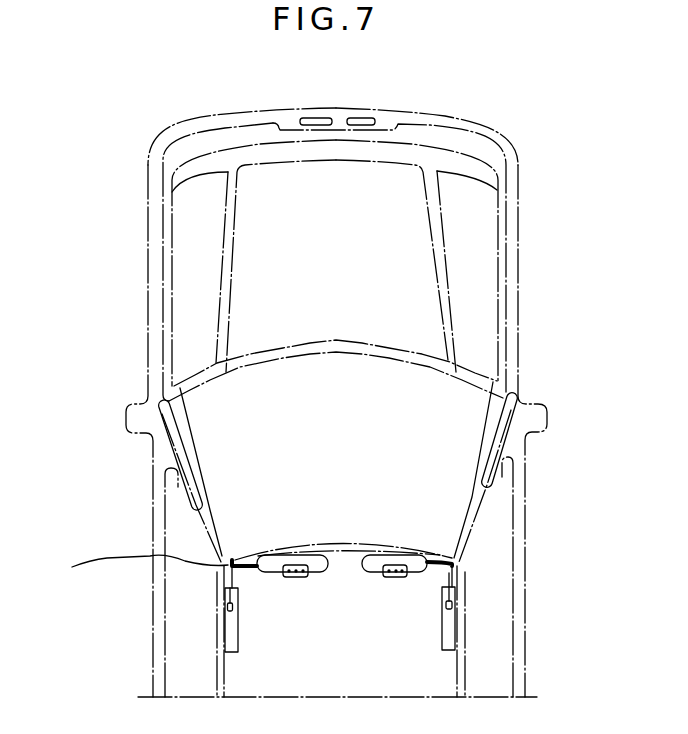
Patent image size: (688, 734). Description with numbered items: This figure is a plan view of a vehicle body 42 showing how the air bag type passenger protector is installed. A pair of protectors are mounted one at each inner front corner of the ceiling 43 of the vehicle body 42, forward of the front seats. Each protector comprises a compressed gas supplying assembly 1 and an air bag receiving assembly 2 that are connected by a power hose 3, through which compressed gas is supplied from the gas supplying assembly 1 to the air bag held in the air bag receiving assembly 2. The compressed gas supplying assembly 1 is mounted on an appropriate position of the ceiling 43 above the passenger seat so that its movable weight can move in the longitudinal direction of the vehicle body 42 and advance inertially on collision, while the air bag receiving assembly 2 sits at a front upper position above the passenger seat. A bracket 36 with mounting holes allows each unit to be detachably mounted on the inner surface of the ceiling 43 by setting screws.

The compressed gas supplying assembly 1 is at (231, 637).
The air bag receiving assembly 2 is at (313, 560).
The power hose 3 is at (233, 560).
The bracket 36 is at (387, 577).
The vehicle body 42 is at (480, 315).
The ceiling 43 is at (137, 576).